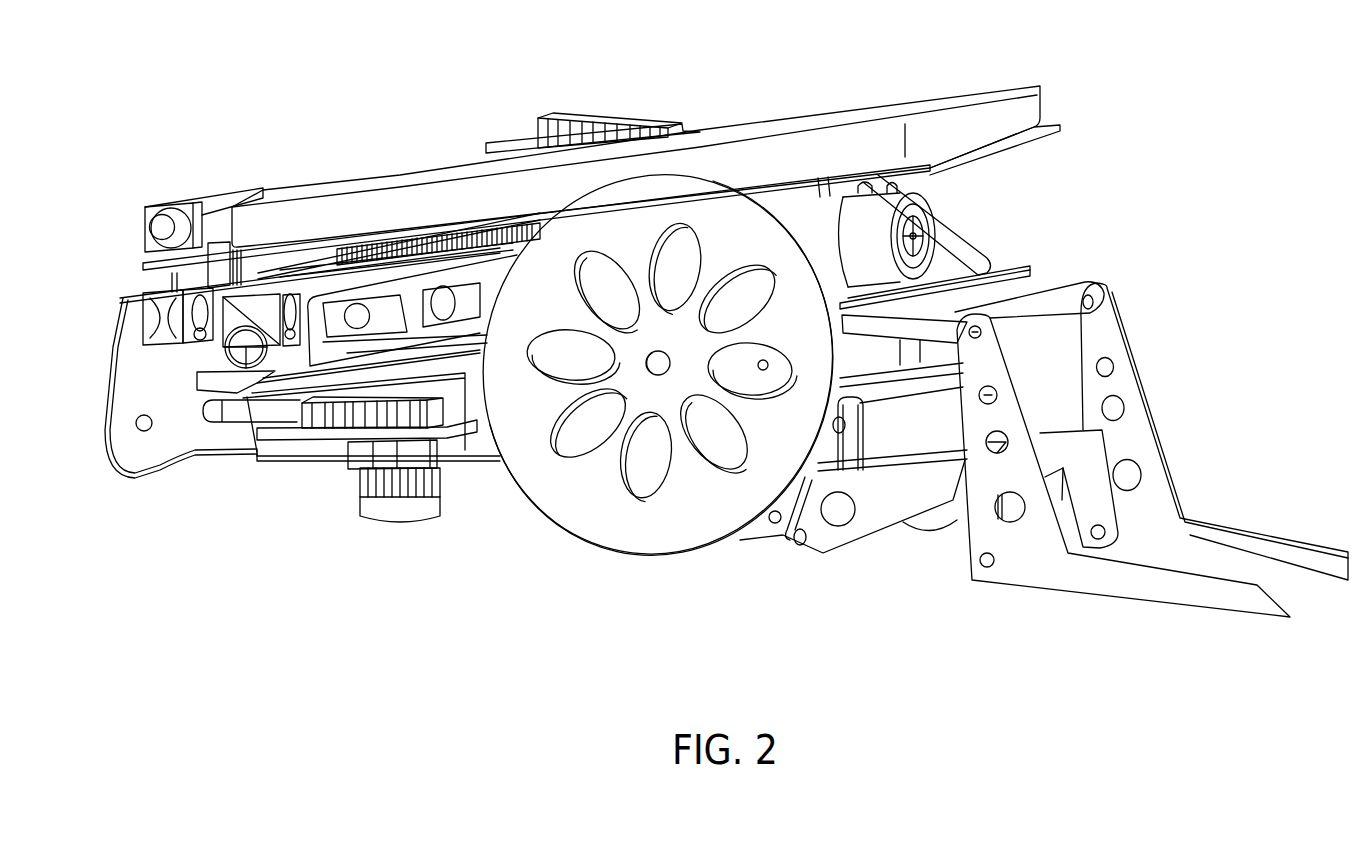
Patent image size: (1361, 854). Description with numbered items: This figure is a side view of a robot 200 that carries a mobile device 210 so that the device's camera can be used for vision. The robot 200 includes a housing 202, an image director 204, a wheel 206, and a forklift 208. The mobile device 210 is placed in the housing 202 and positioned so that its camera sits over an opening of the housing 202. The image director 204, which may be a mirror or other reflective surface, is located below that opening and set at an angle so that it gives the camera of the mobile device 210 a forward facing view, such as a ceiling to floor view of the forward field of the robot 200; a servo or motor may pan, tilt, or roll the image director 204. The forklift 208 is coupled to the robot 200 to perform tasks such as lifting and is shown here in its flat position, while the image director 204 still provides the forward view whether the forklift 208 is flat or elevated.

The robot 200 is at (1162, 160).
The housing 202 is at (188, 258).
The image director 204 is at (950, 233).
The wheel 206 is at (620, 507).
The forklift 208 is at (1160, 517).
The mobile device 210 is at (775, 135).